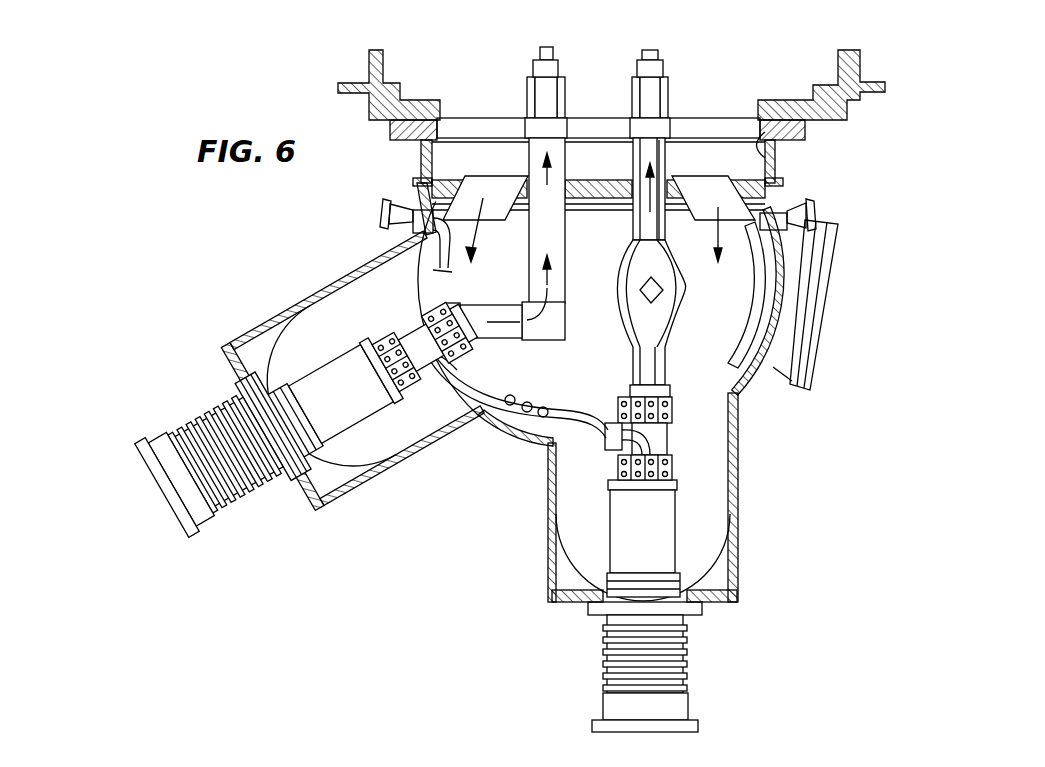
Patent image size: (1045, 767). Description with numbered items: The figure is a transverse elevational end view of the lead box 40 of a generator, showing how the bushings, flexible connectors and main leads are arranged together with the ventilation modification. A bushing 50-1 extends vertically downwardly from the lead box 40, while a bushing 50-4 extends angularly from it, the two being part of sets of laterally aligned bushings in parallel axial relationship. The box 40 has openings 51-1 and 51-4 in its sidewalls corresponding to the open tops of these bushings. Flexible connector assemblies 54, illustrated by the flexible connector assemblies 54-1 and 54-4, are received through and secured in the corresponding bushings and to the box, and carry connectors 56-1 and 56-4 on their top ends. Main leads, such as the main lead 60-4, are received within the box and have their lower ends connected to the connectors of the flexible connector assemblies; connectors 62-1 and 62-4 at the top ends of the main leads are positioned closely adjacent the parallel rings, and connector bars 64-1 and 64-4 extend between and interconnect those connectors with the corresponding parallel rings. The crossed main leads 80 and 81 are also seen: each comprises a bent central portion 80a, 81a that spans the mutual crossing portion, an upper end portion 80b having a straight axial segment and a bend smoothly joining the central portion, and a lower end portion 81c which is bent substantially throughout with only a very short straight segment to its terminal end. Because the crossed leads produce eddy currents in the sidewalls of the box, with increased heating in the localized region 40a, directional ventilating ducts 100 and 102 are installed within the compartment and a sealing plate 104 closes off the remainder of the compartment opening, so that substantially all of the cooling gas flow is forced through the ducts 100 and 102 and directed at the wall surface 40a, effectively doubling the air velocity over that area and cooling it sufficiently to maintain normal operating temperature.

The lead box 40 is at (529, 471).
The localized wall region 40a is at (775, 164).
The bushing 50-1 is at (738, 556).
The bushing 50-4 is at (355, 485).
The opening 51-1 is at (738, 412).
The opening 51-4 is at (410, 260).
The flexible connector assembly 54 is at (258, 502).
The flexible connector assembly 54-1 is at (685, 670).
The flexible connector assembly 54-4 is at (208, 430).
The connector 56-1 is at (619, 404).
The connector 56-4 is at (388, 337).
The main lead 60-4 is at (530, 248).
The connector 62-1 is at (668, 88).
The connector 62-4 is at (566, 90).
The connector bar 64-1 is at (657, 52).
The connector bar 64-4 is at (540, 52).
The crossed main lead 80 is at (630, 229).
The central portion 80a is at (562, 308).
The upper end portion 80b is at (665, 155).
The crossed main lead 81 is at (674, 335).
The central portion 81a is at (692, 297).
The lower end portion 81c is at (667, 373).
The directional ventilating duct 100 is at (495, 205).
The directional ventilating duct 102 is at (714, 180).
The sealing plate 104 is at (603, 183).